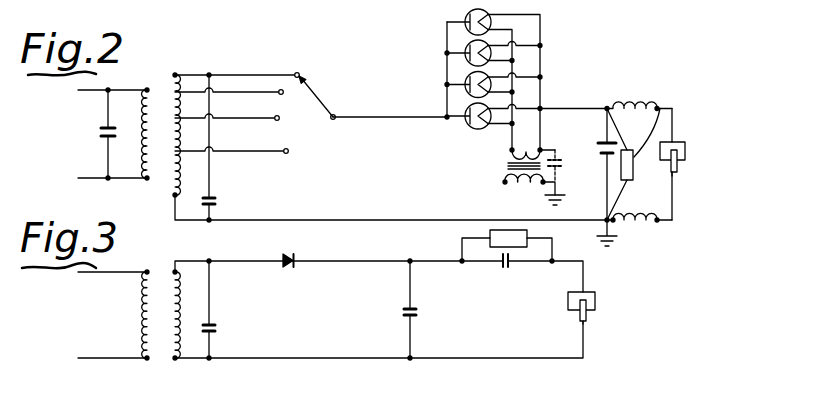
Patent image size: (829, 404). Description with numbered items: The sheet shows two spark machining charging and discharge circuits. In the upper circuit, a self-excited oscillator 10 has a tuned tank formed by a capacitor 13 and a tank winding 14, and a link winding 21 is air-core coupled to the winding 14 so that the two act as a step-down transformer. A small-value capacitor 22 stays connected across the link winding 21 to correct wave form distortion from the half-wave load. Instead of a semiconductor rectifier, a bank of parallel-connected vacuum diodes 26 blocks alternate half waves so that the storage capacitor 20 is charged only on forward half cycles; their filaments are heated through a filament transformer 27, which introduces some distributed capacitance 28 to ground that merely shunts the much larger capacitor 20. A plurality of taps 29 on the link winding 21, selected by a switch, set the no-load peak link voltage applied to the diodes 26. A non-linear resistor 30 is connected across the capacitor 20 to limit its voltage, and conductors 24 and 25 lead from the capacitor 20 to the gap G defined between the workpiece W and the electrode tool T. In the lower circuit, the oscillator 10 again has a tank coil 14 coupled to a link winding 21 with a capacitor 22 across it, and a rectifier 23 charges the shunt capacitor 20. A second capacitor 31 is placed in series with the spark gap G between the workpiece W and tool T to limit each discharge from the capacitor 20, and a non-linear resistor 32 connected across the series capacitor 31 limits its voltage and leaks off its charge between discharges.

In FIG. 3, the self-excited oscillator 10 is at (96, 318).
In FIG. 2, the capacitor 13 is at (101, 134).
In FIG. 2, the inductive coil or winding 14 is at (145, 143).
In FIG. 3, the inductive coil or winding 14 is at (142, 318).
In FIG. 2, the storage capacitor 20 is at (590, 150).
In FIG. 3, the storage capacitor 20 is at (404, 313).
In FIG. 2, the link winding 21 is at (170, 80).
In FIG. 3, the link winding 21 is at (172, 347).
In FIG. 2, the small-value capacitor 22 is at (216, 202).
In FIG. 3, the small-value capacitor 22 is at (217, 328).
In FIG. 3, the rectifier or unidirectional conducting means 23 is at (288, 268).
In FIG. 2, the conductor 24 is at (627, 110).
In FIG. 2, the conductor 25 is at (640, 223).
In FIG. 2, the bank of parallel-connected vacuum diodes 26 is at (472, 129).
In FIG. 2, the filament transformer 27 is at (506, 165).
In FIG. 2, the distributed capacitance 28 is at (566, 160).
In FIG. 2, the taps 29 is at (299, 80).
In FIG. 2, the resistor 30 is at (633, 172).
In FIG. 3, the second capacitor 31 is at (503, 268).
In FIG. 3, the resistor 32 is at (489, 232).
In FIG. 2, the workpiece W is at (686, 148).
In FIG. 3, the workpiece W is at (596, 297).
In FIG. 2, the gap G is at (677, 156).
In FIG. 3, the gap G is at (587, 310).
In FIG. 2, the electrode tool T is at (678, 168).
In FIG. 3, the electrode tool T is at (580, 318).